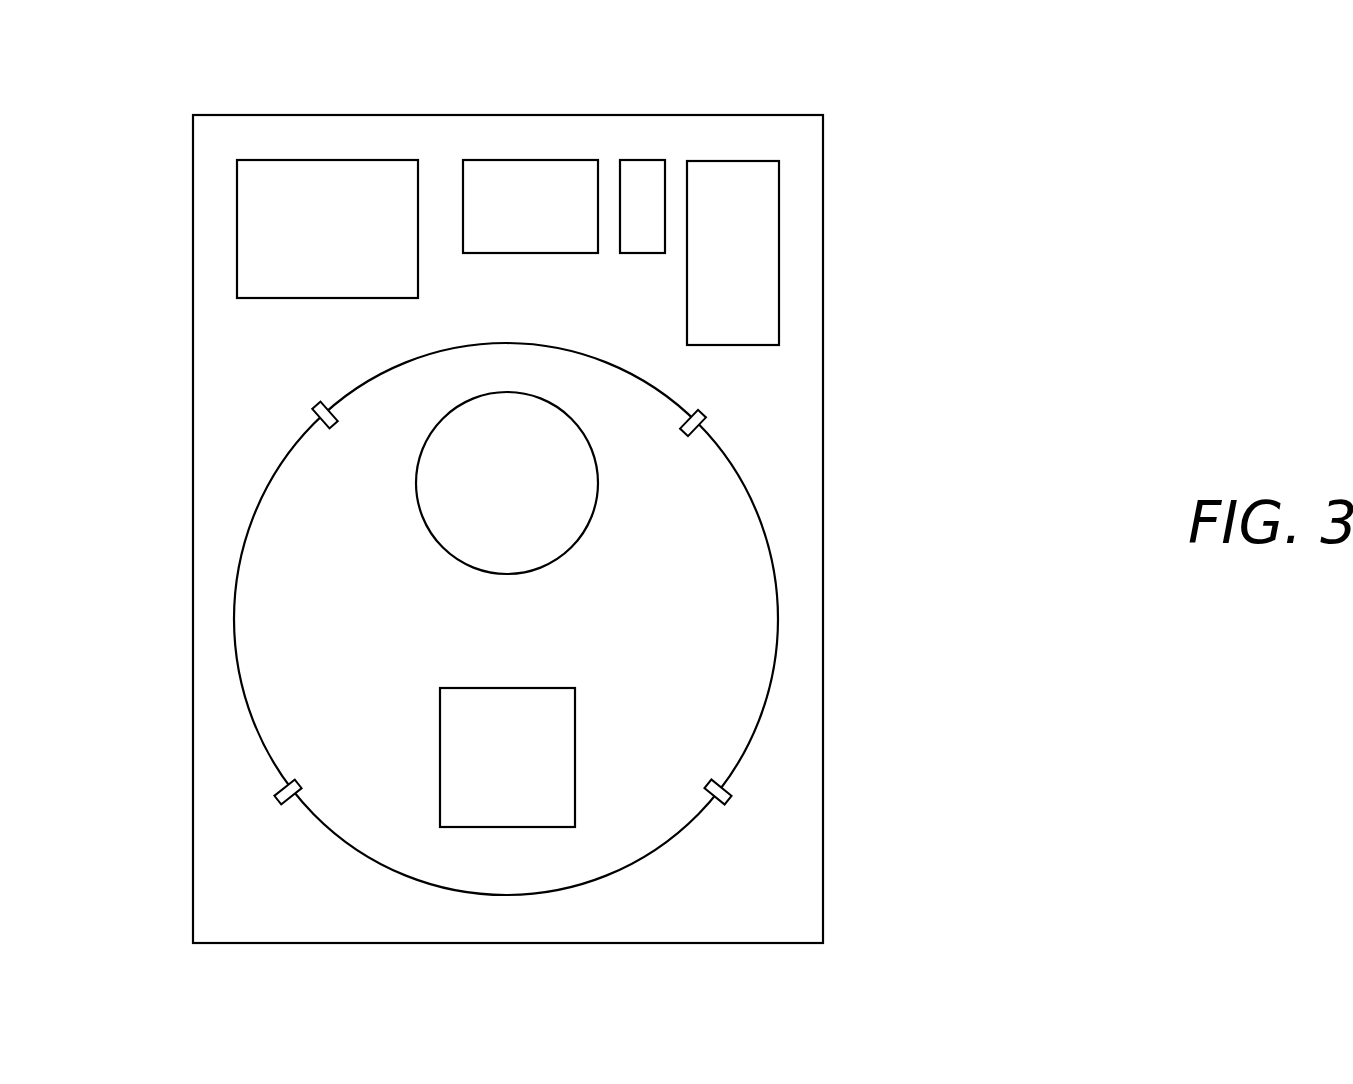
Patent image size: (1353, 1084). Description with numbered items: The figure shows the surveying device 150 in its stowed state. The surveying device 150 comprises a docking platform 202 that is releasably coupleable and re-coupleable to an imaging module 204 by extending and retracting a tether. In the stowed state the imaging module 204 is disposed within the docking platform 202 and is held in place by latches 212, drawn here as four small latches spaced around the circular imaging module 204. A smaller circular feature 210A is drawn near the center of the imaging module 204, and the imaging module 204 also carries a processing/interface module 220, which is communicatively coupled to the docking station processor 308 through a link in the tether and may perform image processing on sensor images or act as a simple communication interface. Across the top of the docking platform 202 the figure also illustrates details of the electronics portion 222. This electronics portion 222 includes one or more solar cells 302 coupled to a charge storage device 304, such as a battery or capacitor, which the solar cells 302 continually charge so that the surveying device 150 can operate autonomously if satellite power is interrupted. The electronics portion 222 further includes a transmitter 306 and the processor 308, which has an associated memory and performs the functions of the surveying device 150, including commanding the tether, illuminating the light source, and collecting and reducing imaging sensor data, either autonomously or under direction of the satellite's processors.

The surveying device 150 is at (997, 376).
The docking platform 202 is at (823, 773).
The imaging module 204 is at (778, 612).
The spindle hub 210A is at (572, 548).
The latches 212 is at (322, 402).
The processing/interface module 220 is at (575, 762).
The electronics portion 222 is at (148, 157).
The solar cells 302 is at (317, 160).
The charge storage device 304 is at (500, 160).
The transmitter 306 is at (640, 160).
The processor 308 is at (779, 253).